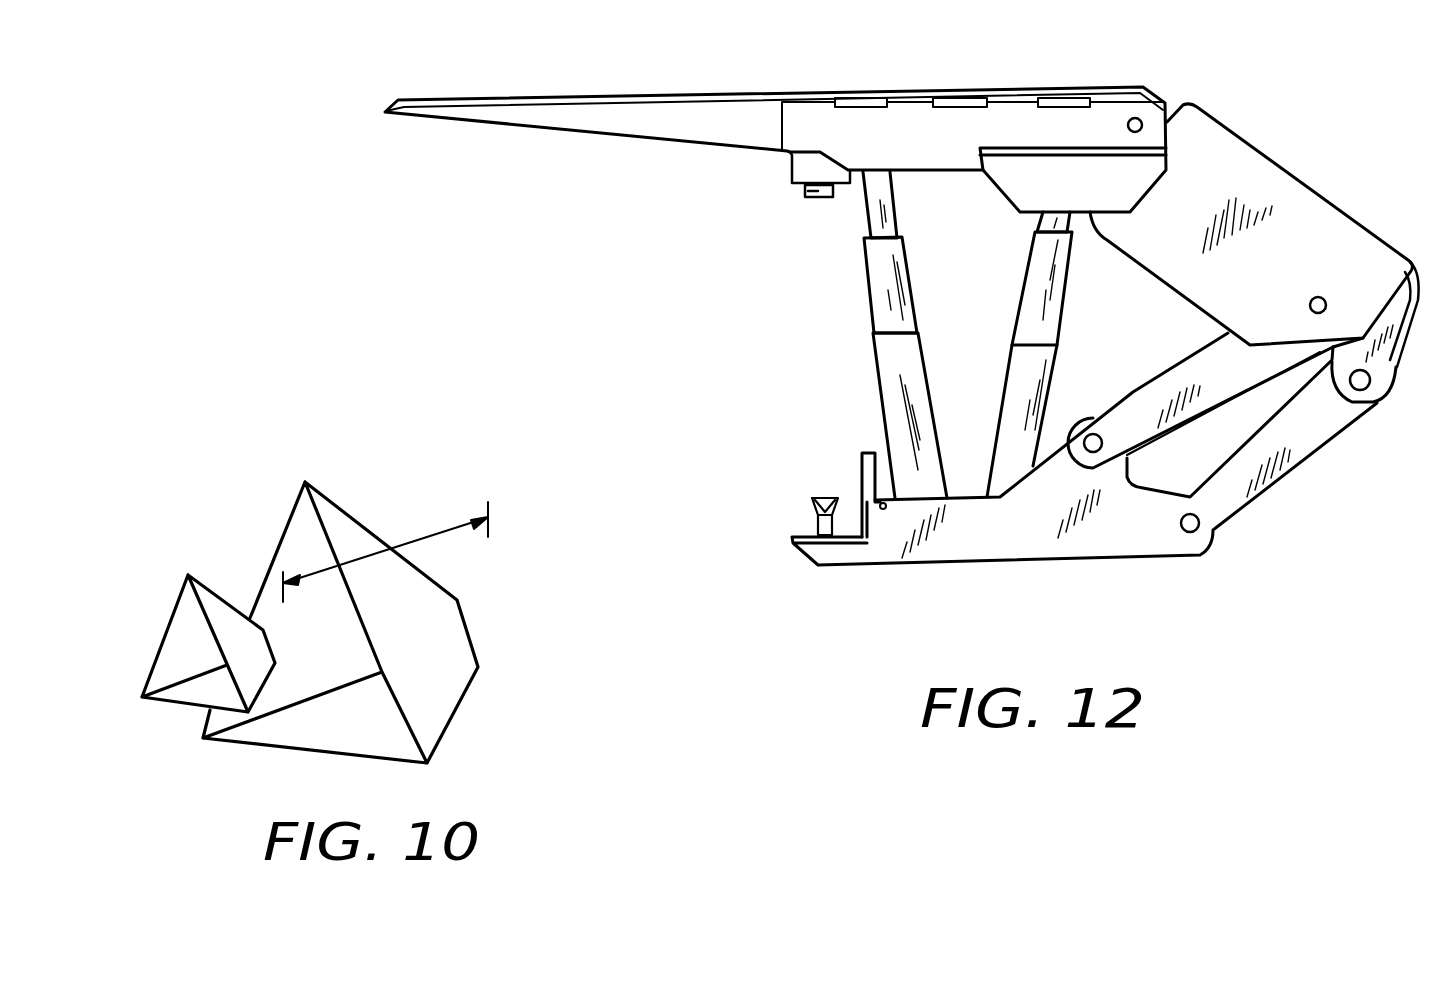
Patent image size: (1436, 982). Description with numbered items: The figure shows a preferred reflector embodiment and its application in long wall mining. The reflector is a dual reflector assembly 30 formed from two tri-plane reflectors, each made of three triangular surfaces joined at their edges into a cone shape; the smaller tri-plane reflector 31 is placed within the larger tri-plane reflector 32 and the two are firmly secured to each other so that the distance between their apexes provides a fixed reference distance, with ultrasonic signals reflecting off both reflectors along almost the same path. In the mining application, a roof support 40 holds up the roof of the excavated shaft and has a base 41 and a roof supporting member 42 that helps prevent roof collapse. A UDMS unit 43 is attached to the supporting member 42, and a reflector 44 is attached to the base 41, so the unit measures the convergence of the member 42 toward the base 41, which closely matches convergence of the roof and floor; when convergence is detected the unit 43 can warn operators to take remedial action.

In FIG. 10, the dual reflector assembly 30 is at (305, 587).
In FIG. 10, the smaller tri-plane reflector 31 is at (187, 573).
In FIG. 10, the larger tri-plane reflector 32 is at (303, 481).
In FIG. 12, the roof support 40 is at (1286, 152).
In FIG. 12, the base 41 is at (1007, 533).
In FIG. 12, the roof supporting member 42 is at (620, 113).
In FIG. 12, the UDMS unit 43 is at (798, 195).
In FIG. 12, the reflector 44 is at (823, 497).